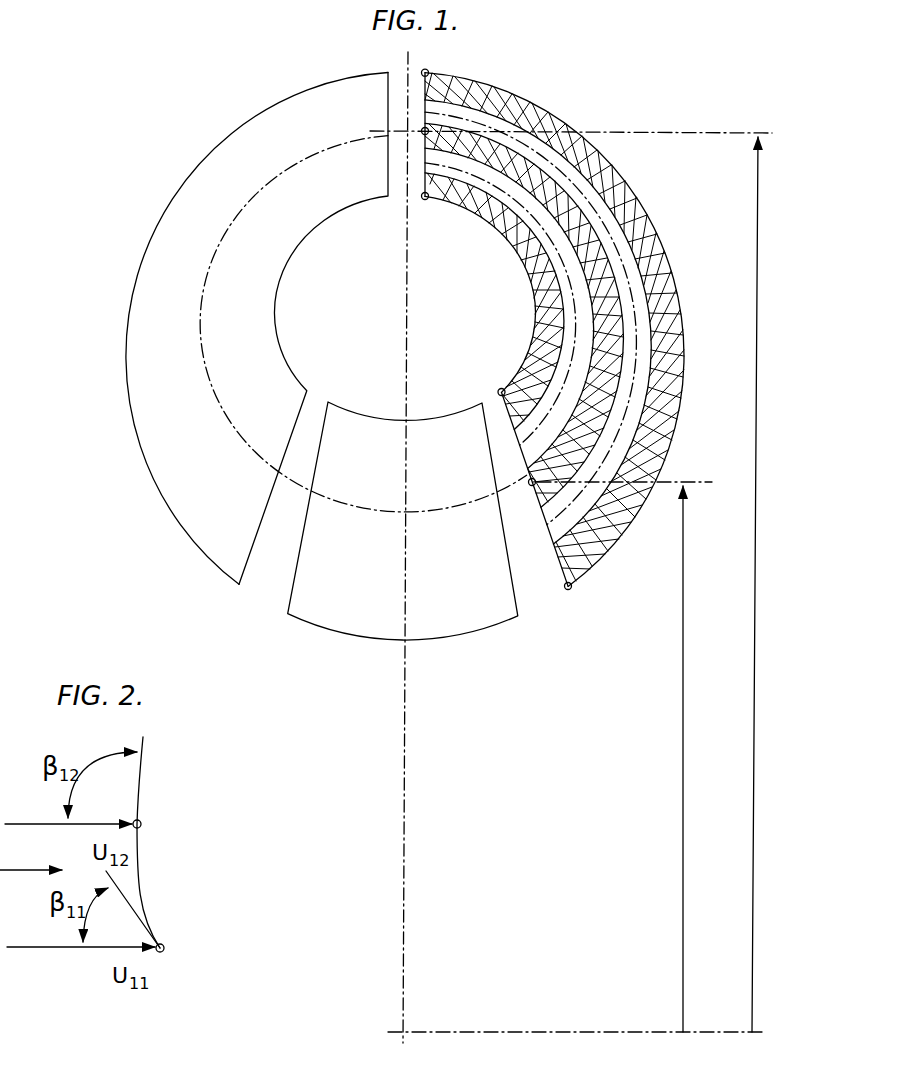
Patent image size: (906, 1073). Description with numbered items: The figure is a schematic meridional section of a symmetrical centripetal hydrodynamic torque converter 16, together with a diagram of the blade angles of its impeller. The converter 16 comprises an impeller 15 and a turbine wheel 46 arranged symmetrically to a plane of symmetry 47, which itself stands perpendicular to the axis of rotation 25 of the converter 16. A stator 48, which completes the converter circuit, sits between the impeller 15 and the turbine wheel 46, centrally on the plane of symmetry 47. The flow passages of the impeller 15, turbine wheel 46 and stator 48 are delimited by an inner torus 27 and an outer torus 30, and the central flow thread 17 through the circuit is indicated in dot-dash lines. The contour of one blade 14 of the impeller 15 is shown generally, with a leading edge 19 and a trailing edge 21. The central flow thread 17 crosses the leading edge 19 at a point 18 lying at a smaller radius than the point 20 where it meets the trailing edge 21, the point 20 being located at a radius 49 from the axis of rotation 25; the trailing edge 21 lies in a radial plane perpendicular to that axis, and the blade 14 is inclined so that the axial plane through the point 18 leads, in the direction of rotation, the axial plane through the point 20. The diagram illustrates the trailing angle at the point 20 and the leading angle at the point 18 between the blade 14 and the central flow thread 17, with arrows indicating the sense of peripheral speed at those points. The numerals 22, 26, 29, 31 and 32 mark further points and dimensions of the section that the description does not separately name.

In FIG. 1, the blade 14 is at (606, 160).
In FIG. 2, the blade 14 is at (155, 873).
In FIG. 1, the impeller 15 is at (586, 331).
In FIG. 1, the torque converter 16 is at (225, 329).
In FIG. 1, the central flow thread 17 is at (302, 494).
In FIG. 1, the point 18 is at (528, 487).
In FIG. 2, the point 18 is at (166, 951).
In FIG. 1, the leading edge 19 is at (552, 538).
In FIG. 1, the point 20 is at (421, 139).
In FIG. 2, the point 20 is at (143, 821).
In FIG. 1, the trailing edge 21 is at (427, 201).
In FIG. 1, the inlet radius dimension 22 is at (683, 803).
In FIG. 1, the axis of rotation 25 is at (607, 1032).
In FIG. 1, the inner boundary point 26 is at (427, 201).
In FIG. 1, the inner torus 27 is at (530, 345).
In FIG. 1, the outer boundary point 29 is at (431, 71).
In FIG. 1, the outer torus 30 is at (672, 240).
In FIG. 1, the inlet inner point 31 is at (497, 388).
In FIG. 1, the inlet outer point 32 is at (572, 591).
In FIG. 1, the turbine wheel 46 is at (128, 412).
In FIG. 1, the plane of symmetry 47 is at (398, 76).
In FIG. 1, the stator 48 is at (367, 638).
In FIG. 1, the radius 49 is at (761, 630).